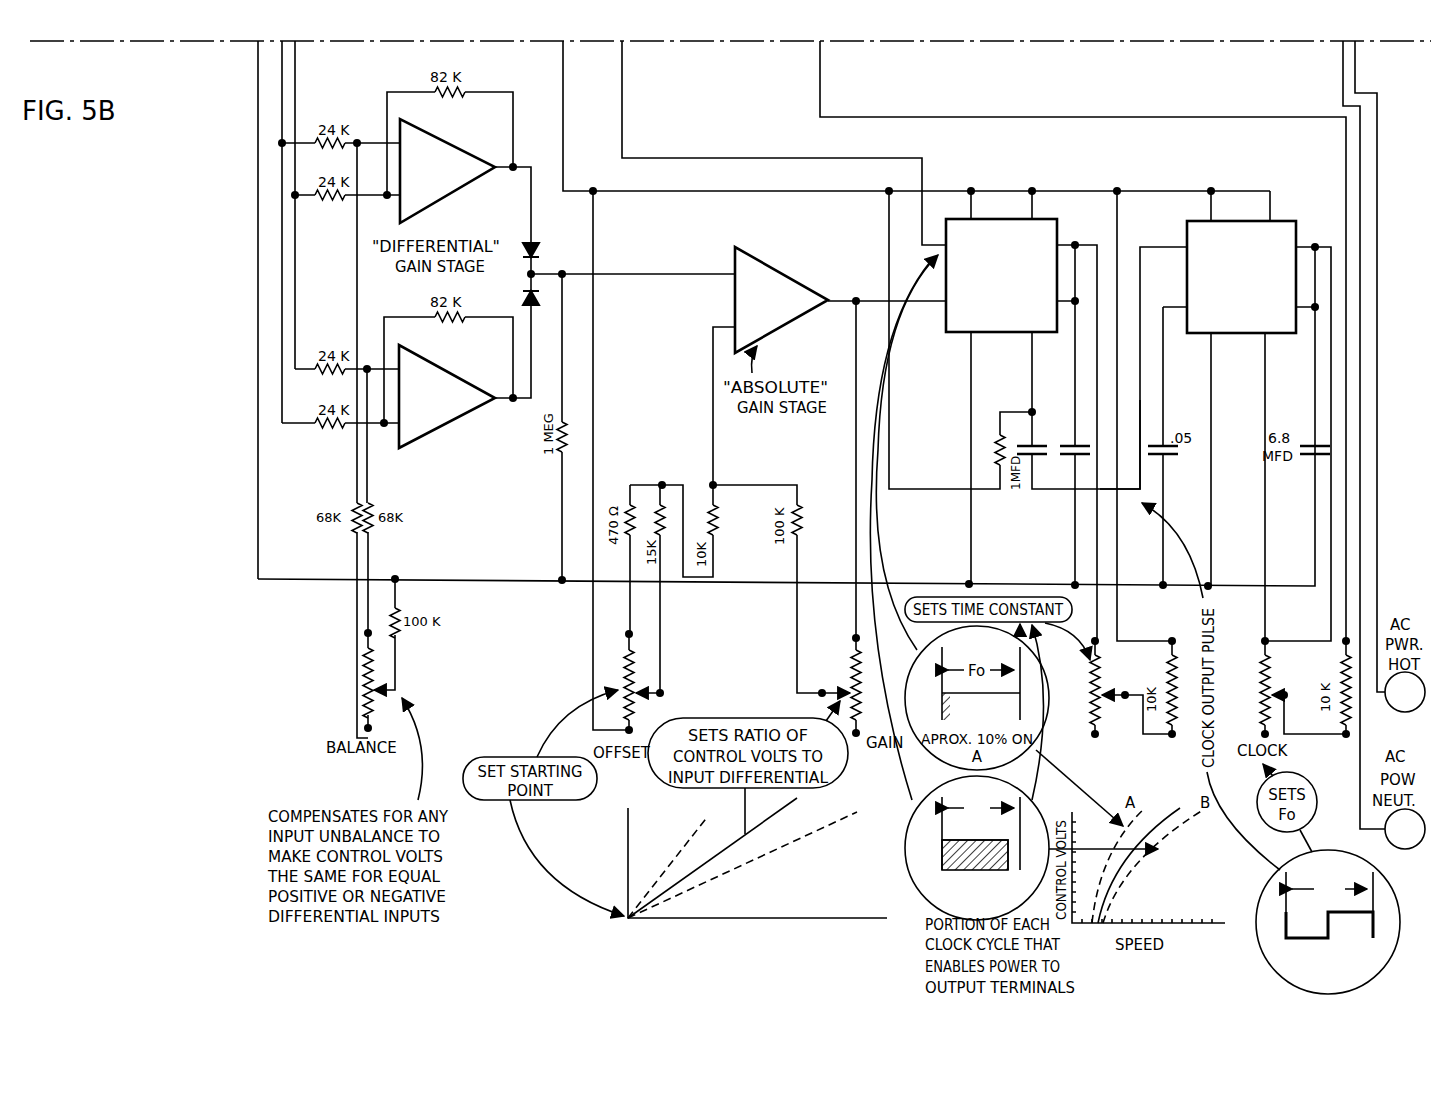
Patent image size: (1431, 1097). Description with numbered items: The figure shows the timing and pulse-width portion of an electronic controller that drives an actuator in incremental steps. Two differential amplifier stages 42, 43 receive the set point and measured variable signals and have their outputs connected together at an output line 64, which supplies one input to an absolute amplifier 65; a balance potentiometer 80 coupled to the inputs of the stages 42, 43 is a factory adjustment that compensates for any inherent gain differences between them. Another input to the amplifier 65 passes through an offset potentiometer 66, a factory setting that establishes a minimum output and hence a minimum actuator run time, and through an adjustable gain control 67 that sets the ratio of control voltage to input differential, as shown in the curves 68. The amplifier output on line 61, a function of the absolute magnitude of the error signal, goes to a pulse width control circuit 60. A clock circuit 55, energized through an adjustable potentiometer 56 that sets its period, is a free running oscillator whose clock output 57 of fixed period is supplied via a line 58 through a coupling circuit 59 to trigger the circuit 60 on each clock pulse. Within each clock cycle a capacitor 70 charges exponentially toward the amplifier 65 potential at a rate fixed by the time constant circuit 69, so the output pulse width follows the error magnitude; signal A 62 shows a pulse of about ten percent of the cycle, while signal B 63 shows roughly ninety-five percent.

The differential amplifier stage 42 is at (470, 187).
The differential amplifier stage 43 is at (450, 420).
The output line 64 is at (546, 272).
The absolute amplifier 65 is at (778, 265).
The line 61 is at (858, 296).
The pulse width control circuit 60 is at (985, 219).
The clock circuit 55 is at (1228, 221).
The coupling circuit 59 is at (1011, 404).
The capacitor 70 is at (1068, 412).
The line 58 is at (1126, 487).
The balance potentiometer 80 is at (400, 670).
The offset potentiometer 66 is at (619, 680).
The adjustable gain control 67 is at (848, 672).
The signal A 62 is at (1045, 738).
The time constant circuit 69 is at (1100, 726).
The adjustable potentiometer 56 is at (1256, 654).
The signal B 63 is at (906, 872).
The curves 68 is at (670, 840).
The clock output 57 is at (1272, 968).